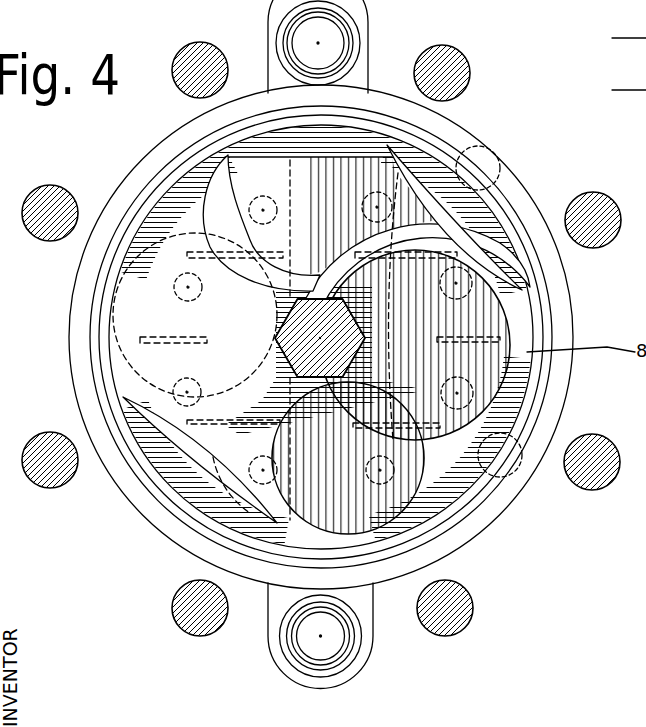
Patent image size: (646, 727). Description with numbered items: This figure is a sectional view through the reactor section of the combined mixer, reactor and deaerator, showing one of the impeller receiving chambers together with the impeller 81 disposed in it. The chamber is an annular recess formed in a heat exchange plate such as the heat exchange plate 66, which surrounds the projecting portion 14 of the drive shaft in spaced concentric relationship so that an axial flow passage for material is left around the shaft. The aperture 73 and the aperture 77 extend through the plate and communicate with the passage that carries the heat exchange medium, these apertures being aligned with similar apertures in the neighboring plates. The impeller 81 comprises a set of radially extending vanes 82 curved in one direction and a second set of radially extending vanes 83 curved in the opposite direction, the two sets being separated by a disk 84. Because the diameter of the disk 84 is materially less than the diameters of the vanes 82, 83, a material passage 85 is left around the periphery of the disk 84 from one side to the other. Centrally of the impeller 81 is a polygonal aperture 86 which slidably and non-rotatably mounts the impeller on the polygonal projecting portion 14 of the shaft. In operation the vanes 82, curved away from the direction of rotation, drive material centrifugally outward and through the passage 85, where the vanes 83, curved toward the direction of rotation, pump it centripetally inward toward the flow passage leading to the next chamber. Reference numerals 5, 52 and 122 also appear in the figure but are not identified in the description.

The key slots 5 is at (337, 267).
The projecting portion of the shaft 14 is at (324, 327).
The bolt holes 52 is at (278, 186).
The heat exchange plate 66 is at (560, 272).
The aperture 73 is at (345, 48).
The aperture 77 is at (300, 663).
The impeller 81 is at (515, 337).
The radially extending vanes 82 is at (210, 162).
The second set of radially extending vanes 83 is at (413, 163).
The disk 84 is at (195, 472).
The material passage 85 is at (517, 308).
The polygonal aperture 86 is at (327, 383).
The mounting bolt holes 122 is at (226, 36).